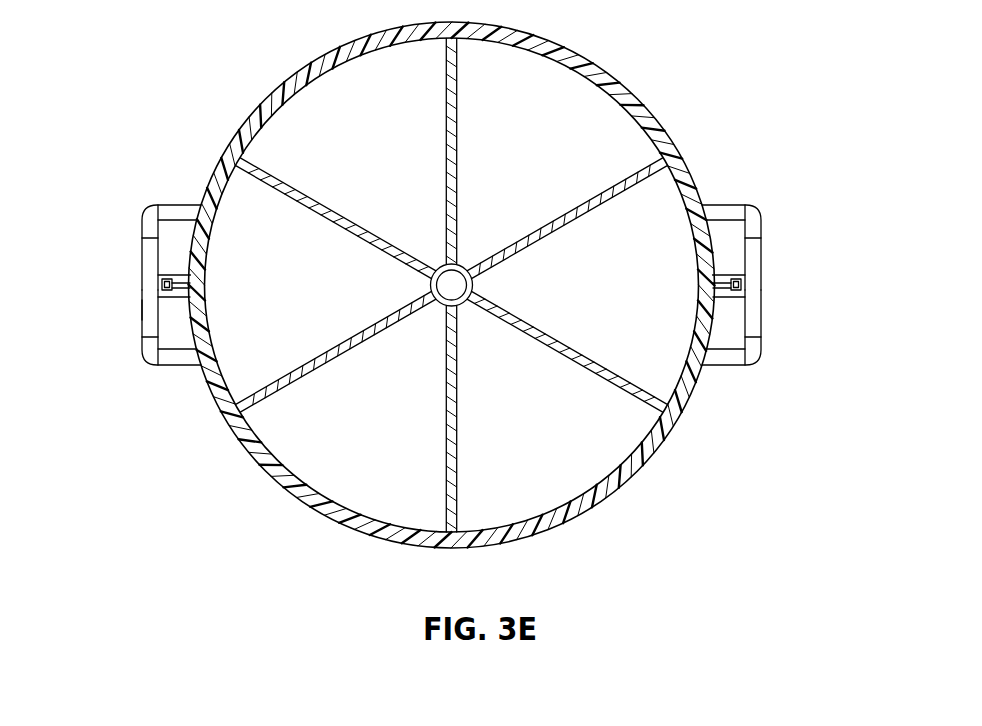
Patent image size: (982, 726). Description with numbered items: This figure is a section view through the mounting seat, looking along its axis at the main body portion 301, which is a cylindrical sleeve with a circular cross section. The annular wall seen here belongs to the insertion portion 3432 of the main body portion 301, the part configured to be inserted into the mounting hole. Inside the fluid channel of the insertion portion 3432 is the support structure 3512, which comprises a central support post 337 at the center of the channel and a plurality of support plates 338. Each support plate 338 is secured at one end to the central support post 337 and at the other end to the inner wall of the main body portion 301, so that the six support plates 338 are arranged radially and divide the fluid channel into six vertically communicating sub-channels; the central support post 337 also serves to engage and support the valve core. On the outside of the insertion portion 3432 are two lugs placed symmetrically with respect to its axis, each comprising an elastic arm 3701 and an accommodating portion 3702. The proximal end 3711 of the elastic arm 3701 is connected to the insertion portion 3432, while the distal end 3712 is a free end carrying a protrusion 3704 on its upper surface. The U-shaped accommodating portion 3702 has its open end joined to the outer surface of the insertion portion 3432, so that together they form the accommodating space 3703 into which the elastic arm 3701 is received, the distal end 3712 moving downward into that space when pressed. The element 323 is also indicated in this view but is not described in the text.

The main body portion 301 is at (320, 512).
The insertion portion 3432 is at (596, 491).
The central support post 337 is at (462, 262).
The support plates 338 is at (334, 356).
The support structure 3512 is at (546, 340).
The accommodating portion 3702 is at (187, 208).
The accommodating space 3703 is at (188, 338).
The protrusion 3704 is at (157, 294).
The distal end 3712 is at (163, 283).
The proximal end 3711 is at (197, 288).
The connector 323 is at (155, 320).
The elastic arm 3701 is at (738, 281).